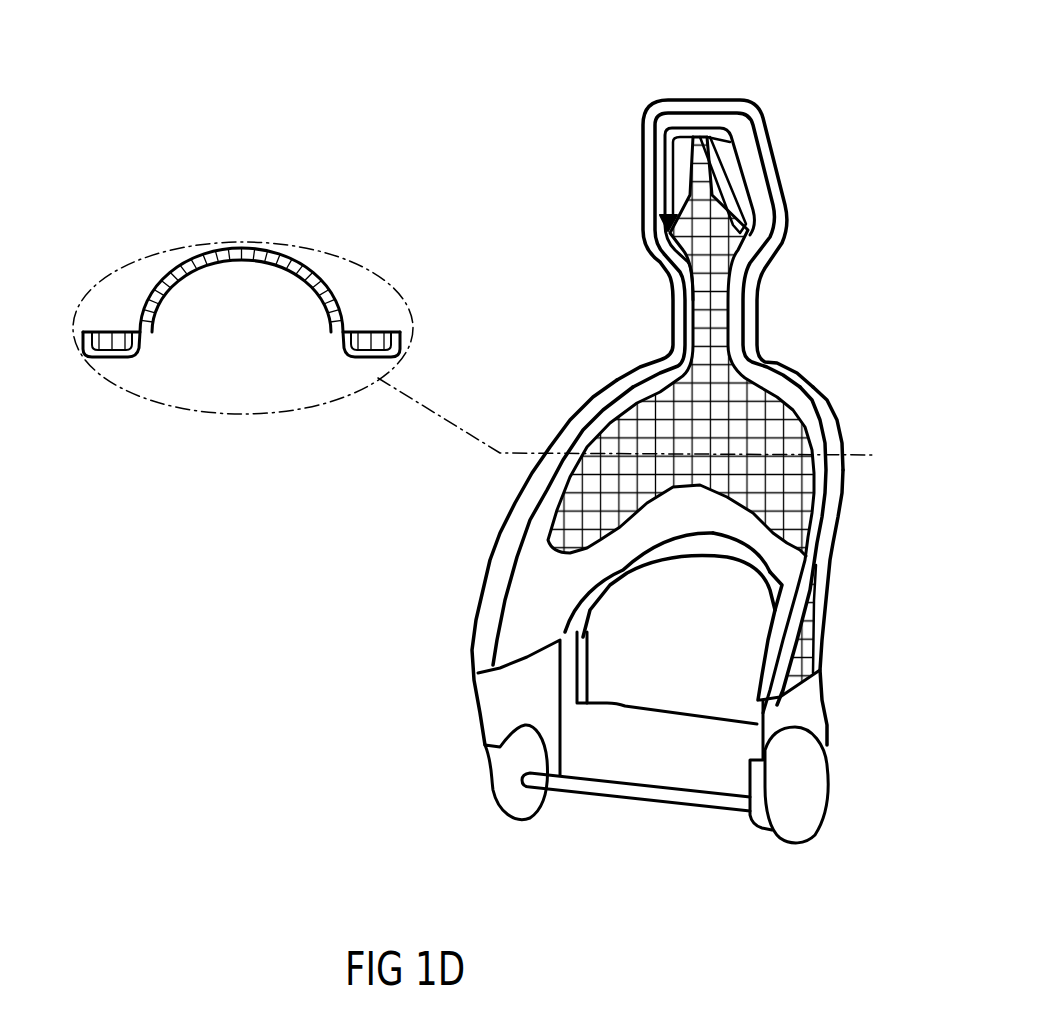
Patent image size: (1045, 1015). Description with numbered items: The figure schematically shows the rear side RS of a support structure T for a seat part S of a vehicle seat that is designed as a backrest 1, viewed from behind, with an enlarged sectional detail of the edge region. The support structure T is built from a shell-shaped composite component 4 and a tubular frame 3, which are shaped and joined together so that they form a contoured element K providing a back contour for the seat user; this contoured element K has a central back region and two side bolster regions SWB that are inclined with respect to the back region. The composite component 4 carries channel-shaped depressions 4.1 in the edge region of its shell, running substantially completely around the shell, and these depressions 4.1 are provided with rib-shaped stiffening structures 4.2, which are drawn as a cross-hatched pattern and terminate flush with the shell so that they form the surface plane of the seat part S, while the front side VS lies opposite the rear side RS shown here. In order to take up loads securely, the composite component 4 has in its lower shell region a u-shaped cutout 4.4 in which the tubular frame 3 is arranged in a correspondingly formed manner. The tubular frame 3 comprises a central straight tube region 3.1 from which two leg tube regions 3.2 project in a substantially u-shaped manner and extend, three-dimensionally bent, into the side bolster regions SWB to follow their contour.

The backrest 1 is at (488, 430).
The support structure T is at (650, 91).
The composite component 4 is at (723, 105).
The seat part S is at (796, 106).
The contoured element K is at (814, 388).
The rear side RS is at (830, 564).
The front side VS is at (551, 487).
The side bolster region SWB is at (539, 527).
The tubular frame 3 is at (637, 570).
The central straight tube region 3.1 is at (750, 563).
The leg tube region 3.2 is at (600, 605).
The depression 4.1 is at (733, 183).
The stiffening structure 4.2 is at (707, 260).
The u-shaped cutout 4.4 is at (655, 683).